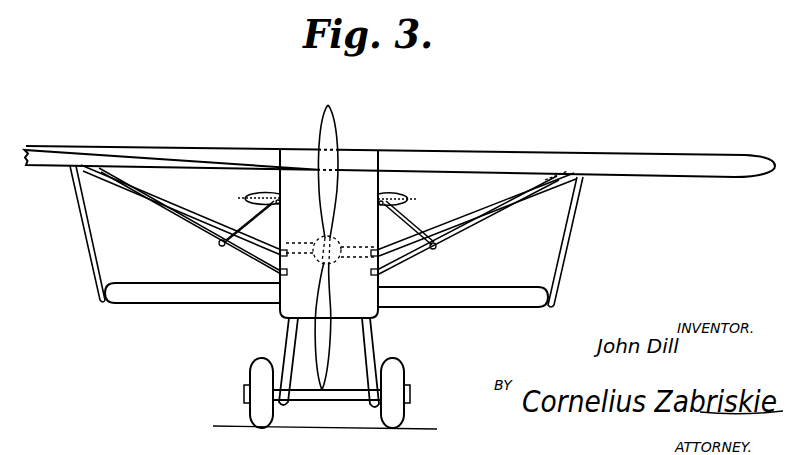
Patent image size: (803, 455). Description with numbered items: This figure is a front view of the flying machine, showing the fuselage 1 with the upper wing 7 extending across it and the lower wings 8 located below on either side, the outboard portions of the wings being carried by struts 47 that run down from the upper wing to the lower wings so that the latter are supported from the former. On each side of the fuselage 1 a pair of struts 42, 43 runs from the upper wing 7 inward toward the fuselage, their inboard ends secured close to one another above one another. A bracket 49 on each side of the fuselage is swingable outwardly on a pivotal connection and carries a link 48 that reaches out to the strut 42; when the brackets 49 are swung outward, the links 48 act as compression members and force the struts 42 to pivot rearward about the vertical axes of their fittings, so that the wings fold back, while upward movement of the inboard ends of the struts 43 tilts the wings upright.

The fuselage 1 is at (277, 313).
The upper wing 7 is at (139, 147).
The lower stub wing 8 is at (153, 295).
The strut 42 is at (192, 228).
The strut 43 is at (190, 209).
The strut 47 is at (93, 247).
The link 48 is at (222, 248).
The bracket 49 is at (258, 191).